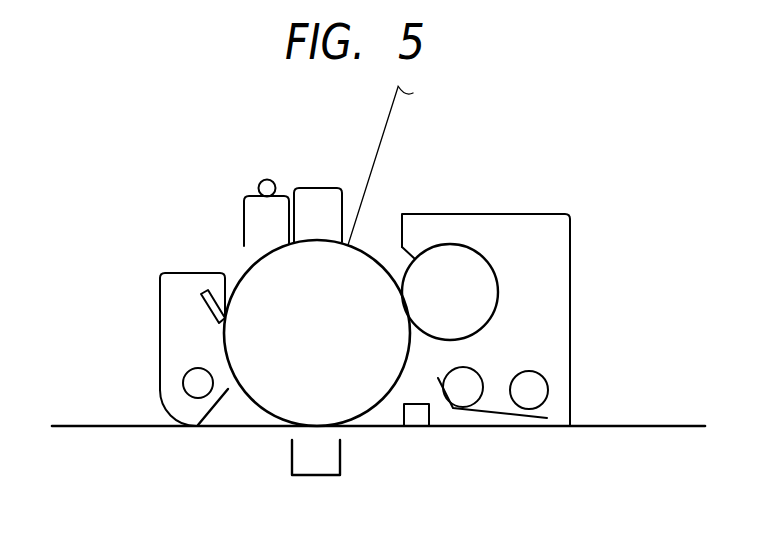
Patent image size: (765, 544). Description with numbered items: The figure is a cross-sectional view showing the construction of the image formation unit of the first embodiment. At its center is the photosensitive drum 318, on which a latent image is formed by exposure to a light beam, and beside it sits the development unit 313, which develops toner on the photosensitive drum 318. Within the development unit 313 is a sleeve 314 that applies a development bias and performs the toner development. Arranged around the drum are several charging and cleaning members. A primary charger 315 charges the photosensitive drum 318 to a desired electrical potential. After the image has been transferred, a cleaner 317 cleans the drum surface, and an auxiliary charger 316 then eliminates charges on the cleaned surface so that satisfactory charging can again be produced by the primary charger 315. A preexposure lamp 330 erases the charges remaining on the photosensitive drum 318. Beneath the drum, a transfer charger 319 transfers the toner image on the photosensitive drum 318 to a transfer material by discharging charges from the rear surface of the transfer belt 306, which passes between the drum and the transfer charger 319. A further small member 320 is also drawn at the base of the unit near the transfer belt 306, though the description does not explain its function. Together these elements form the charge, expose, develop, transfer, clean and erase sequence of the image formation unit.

The transfer belt 306 is at (641, 426).
The development unit 313 is at (557, 213).
The sleeve 314 is at (476, 254).
The primary charger 315 is at (324, 187).
The auxiliary charger 316 is at (244, 208).
The cleaner 317 is at (173, 272).
The photosensitive drum 318 is at (375, 257).
The transfer charger 319 is at (290, 455).
The sensor 320 is at (437, 427).
The preexposure lamp 330 is at (267, 179).